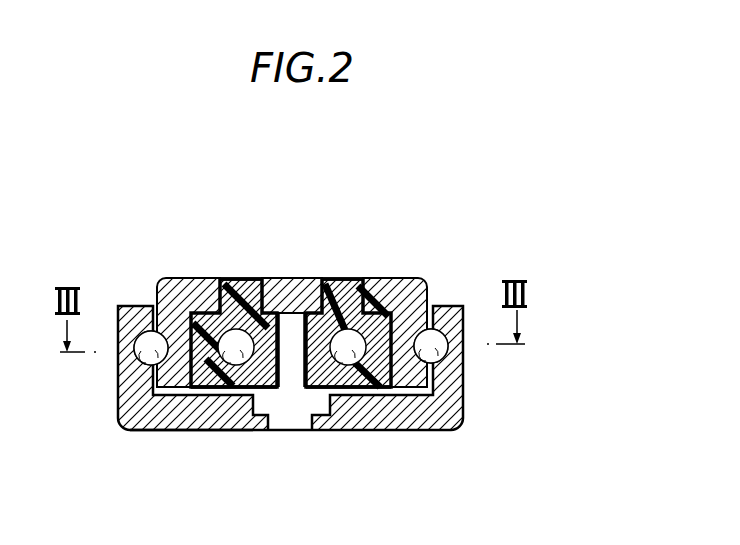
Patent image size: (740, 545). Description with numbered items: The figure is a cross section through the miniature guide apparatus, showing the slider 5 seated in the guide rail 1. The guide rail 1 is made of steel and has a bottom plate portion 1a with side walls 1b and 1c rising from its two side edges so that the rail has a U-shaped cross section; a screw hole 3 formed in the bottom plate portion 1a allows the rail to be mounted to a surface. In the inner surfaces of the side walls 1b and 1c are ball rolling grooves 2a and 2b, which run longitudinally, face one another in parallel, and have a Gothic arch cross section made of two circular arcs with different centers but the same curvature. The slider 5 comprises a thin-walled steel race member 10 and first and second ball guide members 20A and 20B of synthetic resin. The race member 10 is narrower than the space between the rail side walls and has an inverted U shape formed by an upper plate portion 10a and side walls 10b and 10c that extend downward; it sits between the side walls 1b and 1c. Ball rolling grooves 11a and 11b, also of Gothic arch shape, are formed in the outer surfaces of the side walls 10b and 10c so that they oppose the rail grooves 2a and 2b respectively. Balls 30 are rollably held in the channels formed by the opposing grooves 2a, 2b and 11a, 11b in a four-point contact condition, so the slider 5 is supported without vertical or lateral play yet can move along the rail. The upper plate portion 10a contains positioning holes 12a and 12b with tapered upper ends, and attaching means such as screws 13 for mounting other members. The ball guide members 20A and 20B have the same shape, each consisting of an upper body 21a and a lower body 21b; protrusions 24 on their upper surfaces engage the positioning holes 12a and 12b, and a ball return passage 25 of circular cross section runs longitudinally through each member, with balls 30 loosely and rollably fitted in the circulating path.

The guide rail 1 is at (452, 410).
The bottom plate portion 1a is at (176, 418).
The side wall 1b is at (117, 327).
The side wall 1c is at (453, 369).
The ball rolling groove 2a is at (155, 370).
The ball rolling groove 2b is at (447, 336).
The screw hole 3 is at (268, 416).
The slider 5 is at (394, 266).
The race member 10 is at (418, 283).
The upper plate portion 10a is at (203, 282).
The side wall 10b is at (146, 397).
The side wall 10c is at (419, 390).
The ball rolling groove 11a is at (165, 328).
The ball rolling groove 11b is at (441, 296).
The positioning hole 12a is at (223, 287).
The positioning hole 12b is at (355, 284).
The screw 13 is at (265, 283).
The first ball guide member 20A is at (205, 315).
The second ball guide member 20B is at (392, 292).
The upper body 21a is at (289, 311).
The lower body 21b is at (234, 380).
The protrusion 24 is at (241, 283).
The ball return passage 25 is at (217, 381).
The ball 30 is at (137, 344).